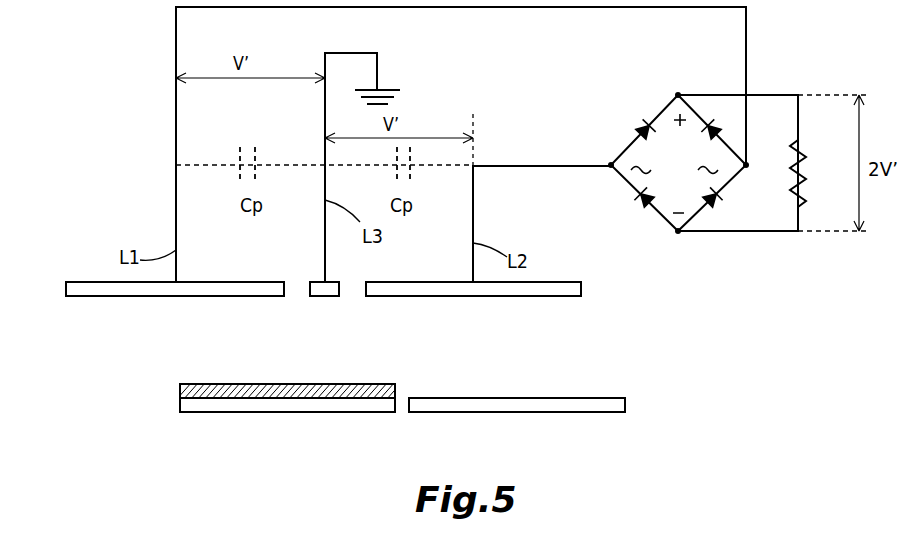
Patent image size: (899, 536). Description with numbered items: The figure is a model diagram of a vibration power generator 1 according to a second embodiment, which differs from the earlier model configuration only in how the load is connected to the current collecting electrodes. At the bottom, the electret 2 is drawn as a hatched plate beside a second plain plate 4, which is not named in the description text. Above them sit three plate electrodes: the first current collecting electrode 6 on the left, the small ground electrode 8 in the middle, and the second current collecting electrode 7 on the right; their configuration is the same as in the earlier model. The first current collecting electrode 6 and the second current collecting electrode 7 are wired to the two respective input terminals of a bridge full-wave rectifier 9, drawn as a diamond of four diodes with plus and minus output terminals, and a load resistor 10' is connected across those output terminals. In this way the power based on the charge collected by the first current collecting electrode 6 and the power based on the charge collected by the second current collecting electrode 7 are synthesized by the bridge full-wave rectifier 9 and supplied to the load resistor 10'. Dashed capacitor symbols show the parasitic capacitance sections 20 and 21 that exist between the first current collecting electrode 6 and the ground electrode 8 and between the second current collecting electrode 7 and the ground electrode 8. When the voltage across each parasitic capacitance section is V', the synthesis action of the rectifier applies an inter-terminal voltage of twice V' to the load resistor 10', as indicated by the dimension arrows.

The vibration power generator 1 is at (748, 385).
The electret 2 is at (383, 384).
The second electrode (power transmission side) 4 is at (587, 412).
The first current collecting electrode 6 is at (140, 297).
The second current collecting electrode 7 is at (500, 297).
The ground electrode 8 is at (325, 297).
The bridge full-wave rectifier 9 is at (657, 217).
The load resistor 10' is at (818, 181).
The parasitic capacitance section 20 is at (255, 147).
The parasitic capacitance section 21 is at (409, 178).